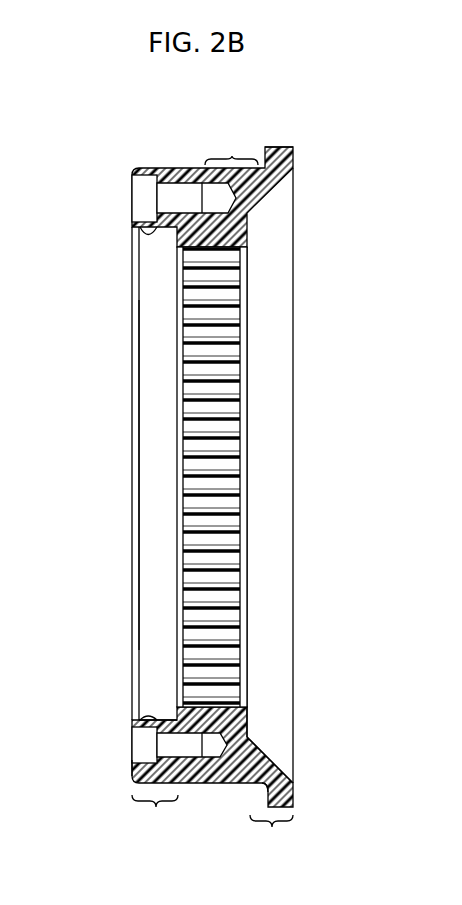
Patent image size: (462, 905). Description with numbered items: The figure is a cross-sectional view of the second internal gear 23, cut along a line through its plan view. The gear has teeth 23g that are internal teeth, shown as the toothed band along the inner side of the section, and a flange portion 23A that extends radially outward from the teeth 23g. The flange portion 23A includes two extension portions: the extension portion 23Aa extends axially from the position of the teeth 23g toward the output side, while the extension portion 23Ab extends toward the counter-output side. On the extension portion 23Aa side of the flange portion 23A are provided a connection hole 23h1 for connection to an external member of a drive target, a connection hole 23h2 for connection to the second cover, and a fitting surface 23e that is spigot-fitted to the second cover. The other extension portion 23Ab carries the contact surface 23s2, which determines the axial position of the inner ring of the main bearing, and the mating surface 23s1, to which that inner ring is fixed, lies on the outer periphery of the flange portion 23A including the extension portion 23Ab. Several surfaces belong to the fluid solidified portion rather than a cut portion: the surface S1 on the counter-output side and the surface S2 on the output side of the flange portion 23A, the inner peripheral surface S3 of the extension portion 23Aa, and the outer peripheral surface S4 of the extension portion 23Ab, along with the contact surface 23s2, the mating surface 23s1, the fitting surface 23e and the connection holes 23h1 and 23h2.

The second internal gear 23 is at (362, 175).
The flange portion 23A is at (273, 235).
The teeth 23g is at (240, 488).
The connection hole 23h1 is at (165, 205).
The connection hole 23h2 is at (172, 742).
The fitting surface 23e is at (152, 240).
The mating surface 23s1 is at (231, 148).
The contact surface 23s2 is at (262, 793).
The extension portion 23Aa is at (151, 819).
The extension portion 23Ab is at (277, 838).
The surface on the counter-output side S1 is at (292, 797).
The surface on the output side S2 is at (137, 723).
The inner peripheral surface S3 is at (158, 605).
The outer peripheral surface S4 is at (280, 147).